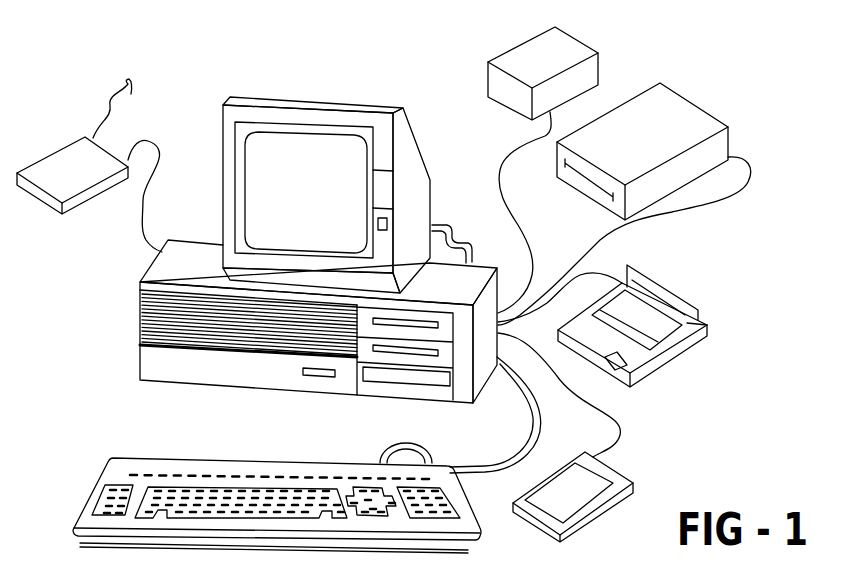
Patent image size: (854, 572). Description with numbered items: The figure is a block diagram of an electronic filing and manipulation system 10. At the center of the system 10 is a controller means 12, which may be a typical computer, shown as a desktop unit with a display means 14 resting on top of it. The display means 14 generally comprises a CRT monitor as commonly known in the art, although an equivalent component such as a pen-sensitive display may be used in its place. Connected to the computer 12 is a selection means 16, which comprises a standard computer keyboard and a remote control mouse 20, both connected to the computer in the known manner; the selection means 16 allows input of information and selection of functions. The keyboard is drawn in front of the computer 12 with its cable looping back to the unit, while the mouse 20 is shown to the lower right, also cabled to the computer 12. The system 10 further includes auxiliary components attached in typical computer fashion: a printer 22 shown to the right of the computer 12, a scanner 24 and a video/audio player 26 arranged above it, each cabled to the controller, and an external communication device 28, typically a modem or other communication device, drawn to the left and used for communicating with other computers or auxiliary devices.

The electronic filing and manipulation system 10 is at (237, 82).
The controller means 12 is at (155, 360).
The display means 14 is at (340, 107).
The selection means 16 is at (113, 480).
The remote control mouse 20 is at (617, 478).
The printer 22 is at (697, 340).
The scanner 24 is at (670, 110).
The video/audio player 26 is at (577, 50).
The external communication device 28 is at (78, 200).